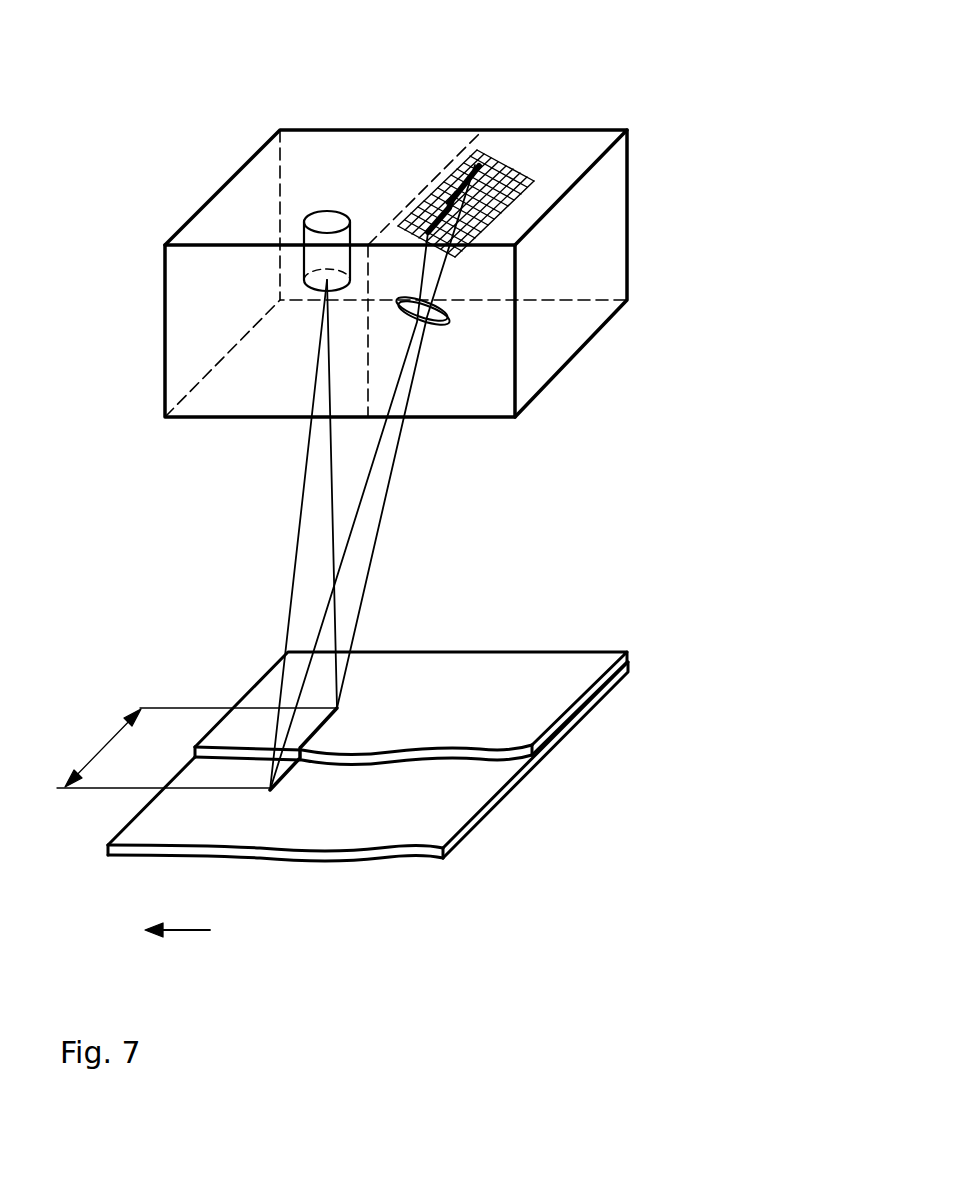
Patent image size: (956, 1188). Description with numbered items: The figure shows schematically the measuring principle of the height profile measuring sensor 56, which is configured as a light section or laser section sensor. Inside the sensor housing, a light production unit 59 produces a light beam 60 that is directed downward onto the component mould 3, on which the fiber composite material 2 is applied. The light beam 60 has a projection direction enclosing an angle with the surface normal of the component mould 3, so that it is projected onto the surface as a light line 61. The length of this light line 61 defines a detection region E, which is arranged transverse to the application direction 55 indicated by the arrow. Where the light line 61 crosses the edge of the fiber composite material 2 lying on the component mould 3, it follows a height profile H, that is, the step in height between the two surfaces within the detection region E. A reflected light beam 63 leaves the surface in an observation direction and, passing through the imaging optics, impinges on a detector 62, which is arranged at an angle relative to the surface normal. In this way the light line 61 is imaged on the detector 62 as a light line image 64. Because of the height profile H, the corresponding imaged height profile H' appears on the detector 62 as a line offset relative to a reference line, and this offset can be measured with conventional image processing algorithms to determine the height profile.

The fiber composite material 2 is at (535, 735).
The component mould 3 is at (460, 810).
The application direction 55 is at (178, 932).
The height profile measuring sensor 56 is at (563, 115).
The light production unit 59 is at (253, 175).
The light beam 60 is at (315, 527).
The light line 61 is at (278, 775).
The detector 62 is at (512, 167).
The reflected light beam 63 is at (367, 546).
The light line image 64 is at (458, 163).
The height profile H is at (395, 656).
The imaged height profile H' is at (436, 105).
The detection region E is at (197, 748).